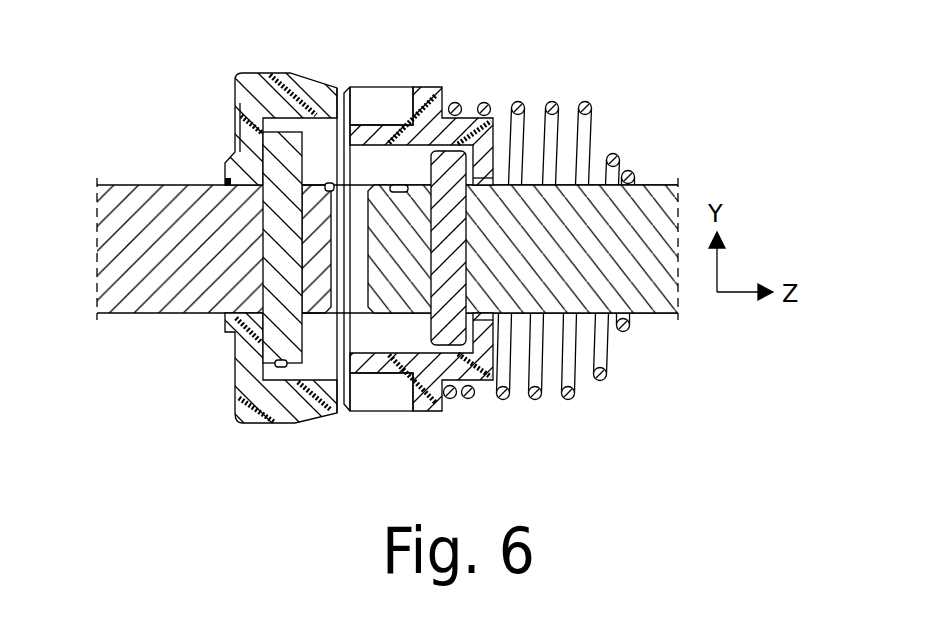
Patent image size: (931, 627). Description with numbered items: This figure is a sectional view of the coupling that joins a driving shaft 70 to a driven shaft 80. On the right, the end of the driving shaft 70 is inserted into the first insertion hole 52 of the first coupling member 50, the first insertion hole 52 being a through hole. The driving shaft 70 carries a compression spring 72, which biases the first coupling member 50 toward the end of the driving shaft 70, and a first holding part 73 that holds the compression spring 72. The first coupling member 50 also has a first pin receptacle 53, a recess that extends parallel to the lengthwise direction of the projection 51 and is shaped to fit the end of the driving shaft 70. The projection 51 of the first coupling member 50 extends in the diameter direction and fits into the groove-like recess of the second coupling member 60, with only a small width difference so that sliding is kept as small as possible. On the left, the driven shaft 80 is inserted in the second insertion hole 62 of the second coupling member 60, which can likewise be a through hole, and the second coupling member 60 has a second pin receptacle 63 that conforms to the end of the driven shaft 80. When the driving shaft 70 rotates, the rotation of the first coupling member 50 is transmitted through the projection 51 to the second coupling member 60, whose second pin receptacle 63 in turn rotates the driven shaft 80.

The first coupling member 50 is at (430, 403).
The projection 51 is at (360, 392).
The first insertion hole 52 is at (405, 184).
The first pin receptacle 53 is at (456, 151).
The second coupling member 60 is at (270, 92).
The second insertion hole 62 is at (330, 182).
The second pin receptacle 63 is at (285, 368).
The driving shaft 70 is at (667, 316).
The compression spring 72 is at (583, 101).
The first holding part 73 is at (633, 171).
The driven shaft 80 is at (145, 205).